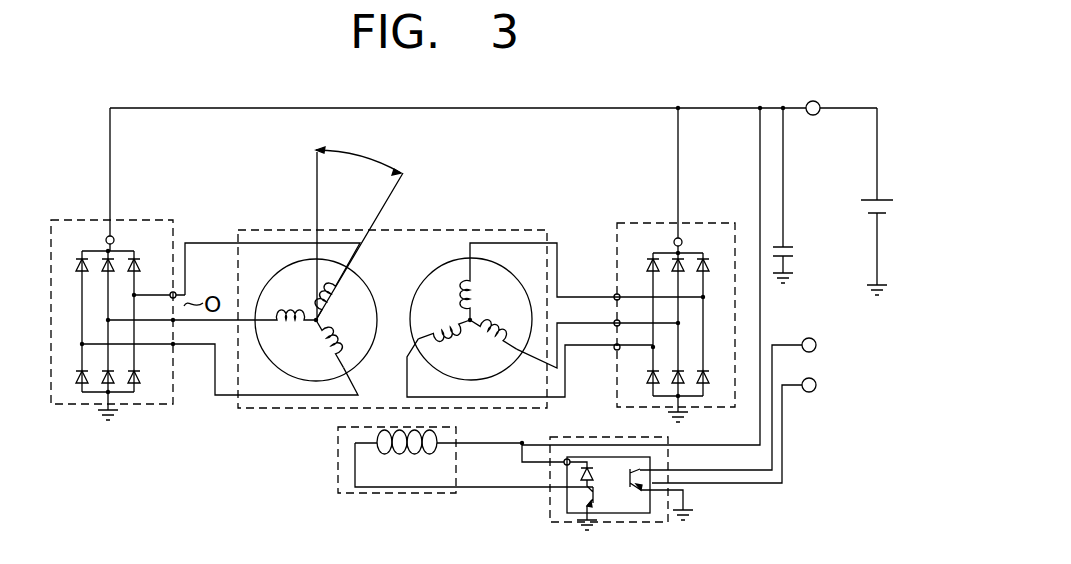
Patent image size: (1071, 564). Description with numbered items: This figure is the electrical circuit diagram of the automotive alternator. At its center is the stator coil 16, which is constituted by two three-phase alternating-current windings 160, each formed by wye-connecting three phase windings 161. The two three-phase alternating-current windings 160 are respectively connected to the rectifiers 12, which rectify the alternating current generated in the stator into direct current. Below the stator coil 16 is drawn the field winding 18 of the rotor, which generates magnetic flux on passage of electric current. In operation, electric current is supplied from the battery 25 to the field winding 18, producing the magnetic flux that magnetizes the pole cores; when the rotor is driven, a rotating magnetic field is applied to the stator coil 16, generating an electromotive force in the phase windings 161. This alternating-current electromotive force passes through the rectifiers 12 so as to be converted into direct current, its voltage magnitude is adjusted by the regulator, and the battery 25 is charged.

The rectifiers 12 is at (157, 220).
The stator coil 16 is at (458, 230).
The three-phase alternating-current windings 160 is at (303, 381).
The phase windings 161 is at (287, 330).
The field winding 18 is at (410, 457).
The battery 25 is at (854, 203).